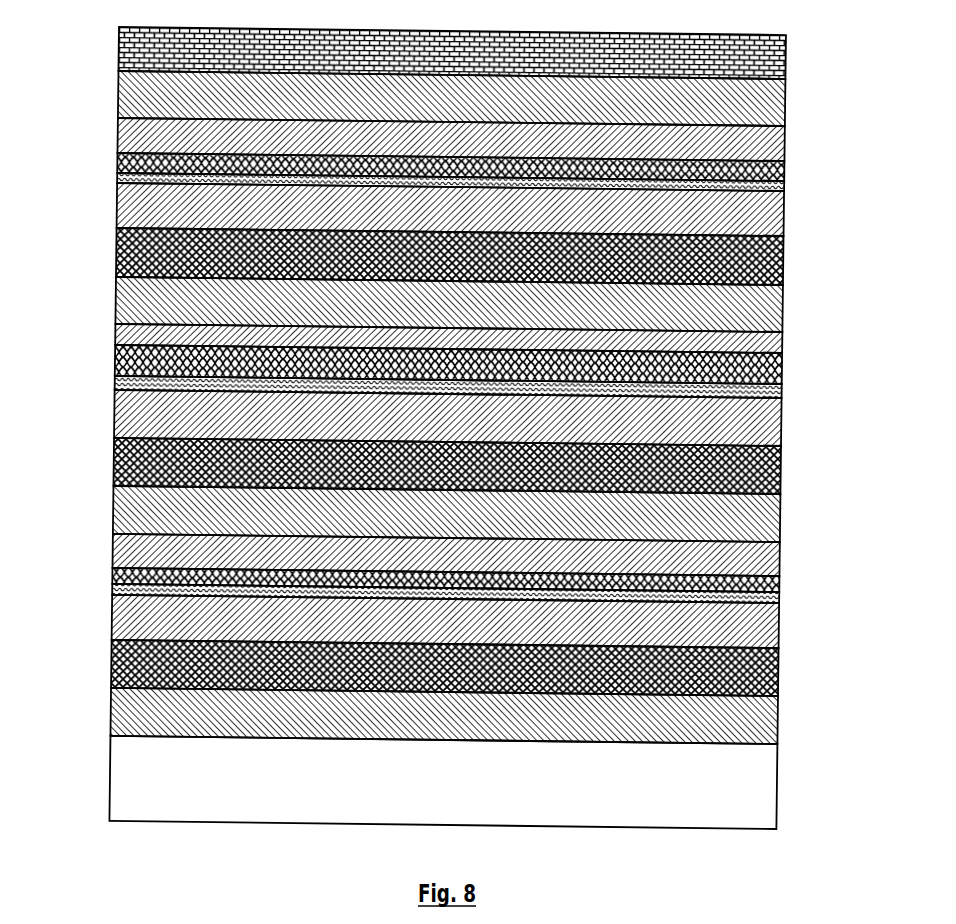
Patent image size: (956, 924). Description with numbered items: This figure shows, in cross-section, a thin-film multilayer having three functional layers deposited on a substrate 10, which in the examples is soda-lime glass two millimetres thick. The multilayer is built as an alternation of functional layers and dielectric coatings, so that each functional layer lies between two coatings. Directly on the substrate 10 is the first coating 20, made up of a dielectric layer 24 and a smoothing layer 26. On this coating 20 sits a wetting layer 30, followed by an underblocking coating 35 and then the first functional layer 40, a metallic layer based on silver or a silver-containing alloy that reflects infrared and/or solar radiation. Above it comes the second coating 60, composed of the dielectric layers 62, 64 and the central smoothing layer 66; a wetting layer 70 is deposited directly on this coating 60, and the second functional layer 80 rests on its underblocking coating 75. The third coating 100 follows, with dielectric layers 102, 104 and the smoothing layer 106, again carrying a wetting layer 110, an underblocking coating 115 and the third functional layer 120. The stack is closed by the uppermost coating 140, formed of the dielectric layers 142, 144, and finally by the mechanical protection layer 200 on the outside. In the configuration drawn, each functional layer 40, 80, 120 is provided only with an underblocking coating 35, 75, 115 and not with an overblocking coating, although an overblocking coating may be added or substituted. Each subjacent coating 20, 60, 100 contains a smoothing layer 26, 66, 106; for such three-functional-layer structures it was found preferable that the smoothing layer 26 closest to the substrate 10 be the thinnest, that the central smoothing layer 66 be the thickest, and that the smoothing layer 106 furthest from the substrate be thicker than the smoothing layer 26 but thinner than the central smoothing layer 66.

The substrate 10 is at (449, 765).
The coating 20 is at (437, 692).
The dielectric layer 24 is at (110, 719).
The smoothing layer 26 is at (110, 669).
The wetting layer 30 is at (110, 625).
The underblocking coating 35 is at (110, 579).
The functional layer 40 is at (456, 575).
The coating 60 is at (438, 507).
The dielectric layer 62 is at (110, 547).
The dielectric layer 64 is at (110, 509).
The smoothing layer 66 is at (110, 462).
The wetting layer 70 is at (113, 417).
The underblocking coating 75 is at (107, 383).
The functional layer 80 is at (458, 371).
The coating 100 is at (444, 292).
The dielectric layer 102 is at (113, 327).
The dielectric layer 104 is at (113, 307).
The smoothing layer 106 is at (113, 259).
The wetting layer 110 is at (115, 212).
The underblocking coating 115 is at (115, 165).
The functional layer 120 is at (449, 165).
The coating 140 is at (444, 116).
The dielectric layer 142 is at (115, 132).
The dielectric layer 144 is at (115, 95).
The mechanical protection layer 200 is at (113, 40).